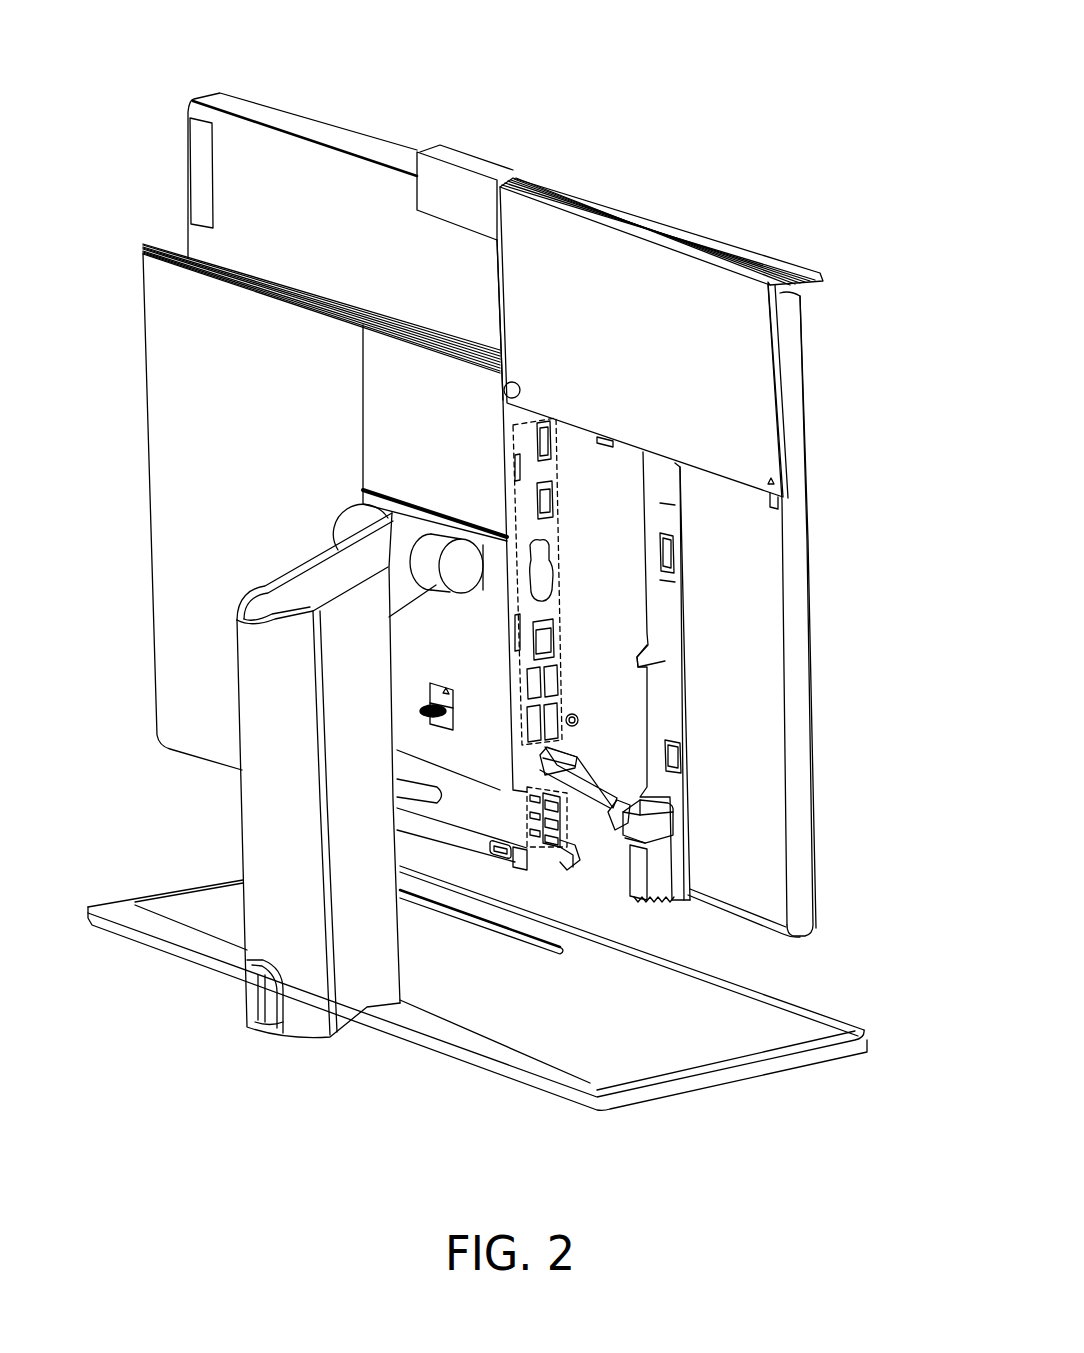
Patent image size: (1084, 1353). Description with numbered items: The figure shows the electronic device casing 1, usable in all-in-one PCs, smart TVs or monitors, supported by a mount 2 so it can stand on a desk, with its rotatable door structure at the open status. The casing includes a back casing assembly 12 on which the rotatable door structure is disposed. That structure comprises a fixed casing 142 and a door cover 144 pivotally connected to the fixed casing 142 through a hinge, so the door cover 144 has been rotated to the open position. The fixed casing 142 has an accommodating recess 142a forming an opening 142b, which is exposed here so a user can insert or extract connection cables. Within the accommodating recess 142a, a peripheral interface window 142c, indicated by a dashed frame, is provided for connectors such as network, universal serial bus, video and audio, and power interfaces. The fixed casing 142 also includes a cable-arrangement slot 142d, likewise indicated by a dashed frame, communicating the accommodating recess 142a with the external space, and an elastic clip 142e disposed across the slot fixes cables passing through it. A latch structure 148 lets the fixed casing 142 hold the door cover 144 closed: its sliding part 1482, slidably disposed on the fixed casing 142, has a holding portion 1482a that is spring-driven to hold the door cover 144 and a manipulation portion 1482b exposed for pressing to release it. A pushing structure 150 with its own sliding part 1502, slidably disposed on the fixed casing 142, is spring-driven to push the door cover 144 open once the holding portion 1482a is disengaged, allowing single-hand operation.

The electronic device casing 1 is at (690, 93).
The mount 2 is at (272, 1077).
The back casing assembly 12 is at (163, 204).
The fixed casing 142 is at (470, 390).
The accommodating recess 142a is at (630, 605).
The opening 142b is at (647, 636).
The peripheral interface window 142c is at (516, 498).
The cable-arrangement slot 142d is at (523, 812).
The elastic clip 142e is at (565, 786).
The door cover 144 is at (698, 275).
The latch structure 148 is at (520, 858).
The sliding part 1482 is at (573, 1128).
The holding portion 1482a is at (537, 865).
The manipulation portion 1482b is at (500, 858).
The pushing structure 150 is at (635, 840).
The sliding part 1502 is at (668, 823).